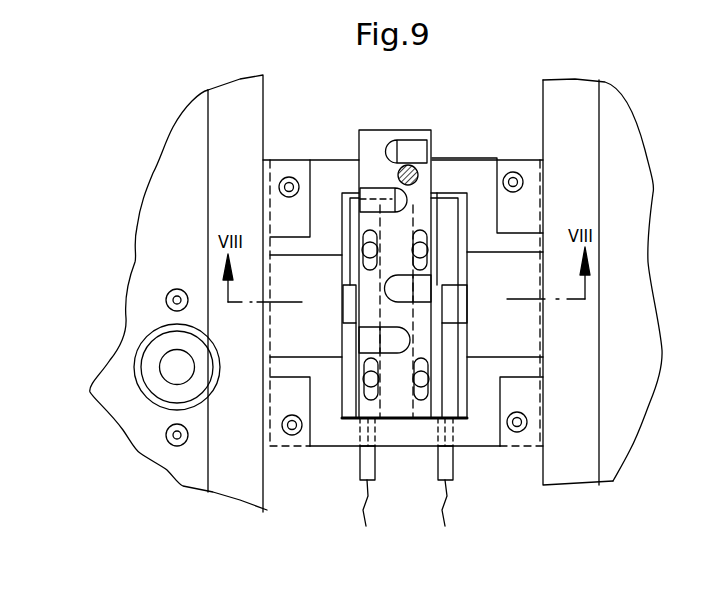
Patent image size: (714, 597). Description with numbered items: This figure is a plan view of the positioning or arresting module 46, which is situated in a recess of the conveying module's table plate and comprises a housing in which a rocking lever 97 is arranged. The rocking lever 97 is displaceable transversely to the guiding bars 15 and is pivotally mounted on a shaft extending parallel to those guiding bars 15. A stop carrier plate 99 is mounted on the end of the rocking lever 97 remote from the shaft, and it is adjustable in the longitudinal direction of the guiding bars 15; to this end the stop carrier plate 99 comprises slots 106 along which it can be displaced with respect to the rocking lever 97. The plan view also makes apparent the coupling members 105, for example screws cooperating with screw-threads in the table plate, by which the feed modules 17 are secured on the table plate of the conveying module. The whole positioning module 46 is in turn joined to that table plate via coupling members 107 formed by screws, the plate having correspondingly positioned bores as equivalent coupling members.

The guiding bars 15 is at (243, 123).
The feed modules 17 is at (141, 404).
The positioning module 46 is at (468, 129).
The rocking lever 97 is at (443, 383).
The stop carrier plate 99 is at (367, 147).
The coupling members 105 is at (167, 289).
The slots 106 is at (372, 412).
The coupling members 107 is at (515, 178).